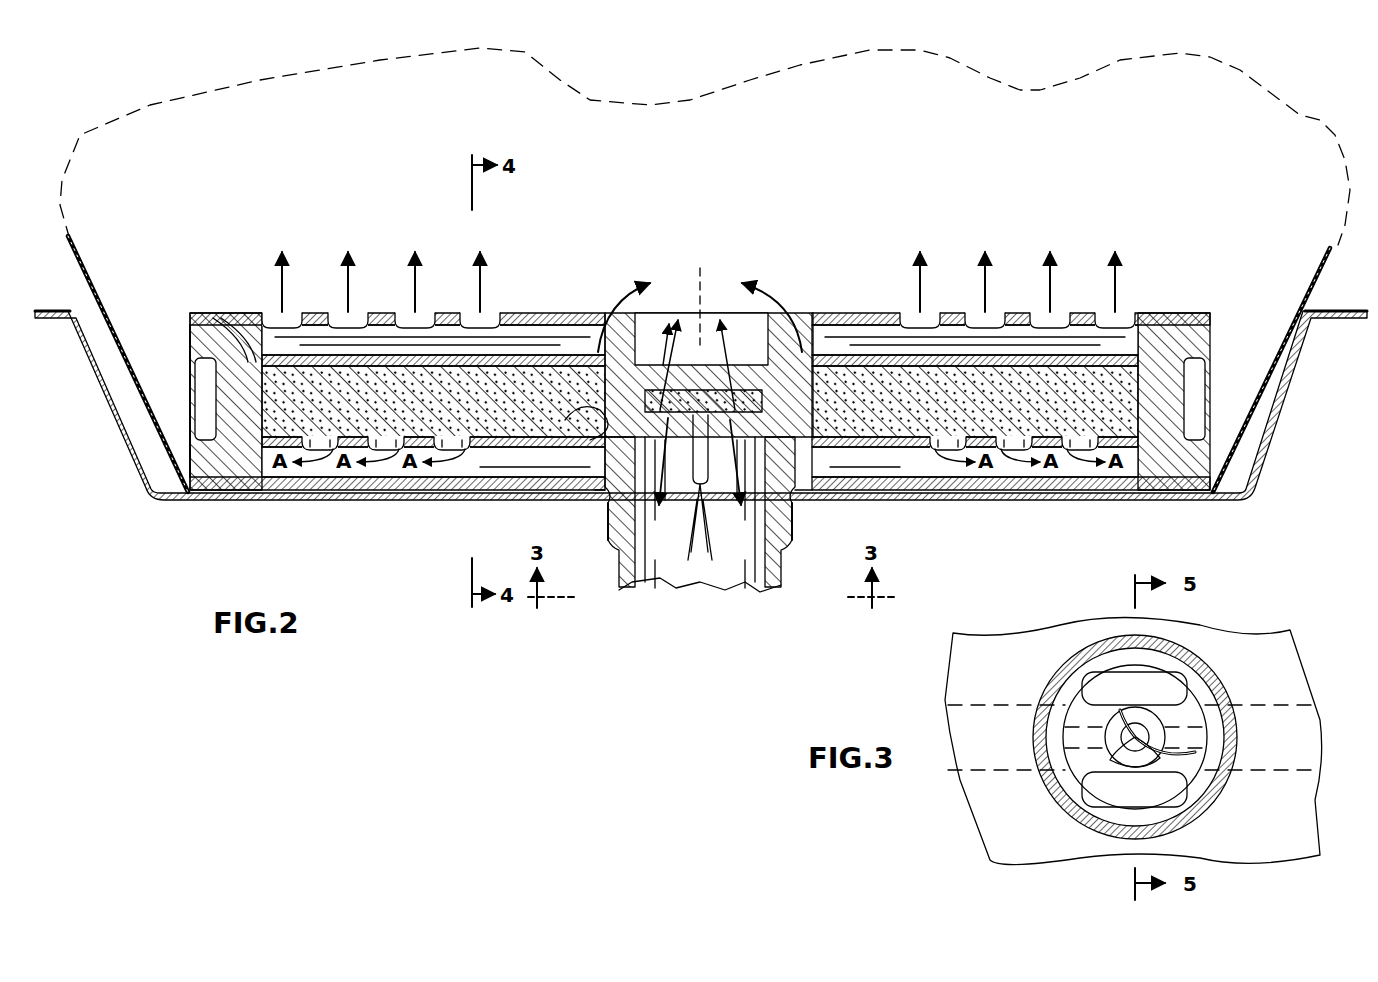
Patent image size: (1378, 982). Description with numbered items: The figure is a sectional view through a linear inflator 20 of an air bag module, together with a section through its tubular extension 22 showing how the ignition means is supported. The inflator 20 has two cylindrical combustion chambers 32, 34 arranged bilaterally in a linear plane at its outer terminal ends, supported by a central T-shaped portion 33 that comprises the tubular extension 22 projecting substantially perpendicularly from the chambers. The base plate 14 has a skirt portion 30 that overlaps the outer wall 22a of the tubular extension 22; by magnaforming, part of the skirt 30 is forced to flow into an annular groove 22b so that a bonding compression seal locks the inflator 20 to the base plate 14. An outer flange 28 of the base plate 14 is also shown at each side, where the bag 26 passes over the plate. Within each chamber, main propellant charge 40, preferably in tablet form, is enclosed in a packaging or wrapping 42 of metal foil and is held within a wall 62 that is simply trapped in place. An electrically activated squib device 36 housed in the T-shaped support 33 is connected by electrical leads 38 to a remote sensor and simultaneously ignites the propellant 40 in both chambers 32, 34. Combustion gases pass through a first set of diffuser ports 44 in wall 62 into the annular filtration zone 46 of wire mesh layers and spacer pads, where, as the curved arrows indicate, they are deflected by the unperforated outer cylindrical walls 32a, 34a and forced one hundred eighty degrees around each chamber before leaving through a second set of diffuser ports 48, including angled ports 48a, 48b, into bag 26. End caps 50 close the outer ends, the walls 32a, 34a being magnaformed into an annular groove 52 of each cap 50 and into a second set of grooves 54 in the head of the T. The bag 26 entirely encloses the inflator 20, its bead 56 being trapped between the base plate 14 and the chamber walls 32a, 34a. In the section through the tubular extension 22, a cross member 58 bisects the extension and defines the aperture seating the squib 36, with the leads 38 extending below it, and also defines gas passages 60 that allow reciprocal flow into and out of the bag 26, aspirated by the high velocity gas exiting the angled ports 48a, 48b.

In FIG. 2, the base plate 14 is at (100, 398).
In FIG. 2, the inflator 20 is at (592, 230).
In FIG. 2, the tubular extension 22 is at (705, 570).
In FIG. 2, the outer wall 22a is at (630, 572).
In FIG. 3, the outer wall 22a is at (1210, 775).
In FIG. 2, the annular groove 22b is at (652, 495).
In FIG. 2, the bag 26 is at (75, 272).
In FIG. 2, the tray flange 28 is at (50, 314).
In FIG. 2, the skirt portion 30 is at (796, 525).
In FIG. 3, the skirt portion 30 is at (1183, 815).
In FIG. 2, the combustion chamber 32 is at (517, 310).
In FIG. 2, the outer cylindrical wall 32a is at (246, 313).
In FIG. 2, the central T-shaped portion 33 is at (662, 350).
In FIG. 2, the combustion chamber 34 is at (862, 312).
In FIG. 2, the outer cylindrical wall 34a is at (1155, 313).
In FIG. 2, the squib device 36 is at (700, 455).
In FIG. 3, the squib device 36 is at (1120, 710).
In FIG. 2, the electrical leads 38 is at (704, 532).
In FIG. 3, the electrical leads 38 is at (1138, 762).
In FIG. 2, the propellant 40 is at (410, 404).
In FIG. 2, the packaging or wrapping 42 is at (190, 325).
In FIG. 2, the first set of diffuser ports 44 is at (452, 452).
In FIG. 2, the filtration zone 46 is at (303, 345).
In FIG. 2, the second set of diffuser ports 48 is at (486, 312).
In FIG. 2, the angled port 48a is at (598, 318).
In FIG. 2, the angled port 48b is at (835, 313).
In FIG. 2, the end cap 50 is at (235, 392).
In FIG. 2, the annular groove 52 is at (215, 472).
In FIG. 2, the second set of grooves 54 is at (575, 420).
In FIG. 2, the bead 56 is at (610, 505).
In FIG. 3, the cross member 58 is at (1085, 722).
In FIG. 3, the gas passages 60 is at (1165, 693).
In FIG. 2, the wall 62 is at (360, 368).